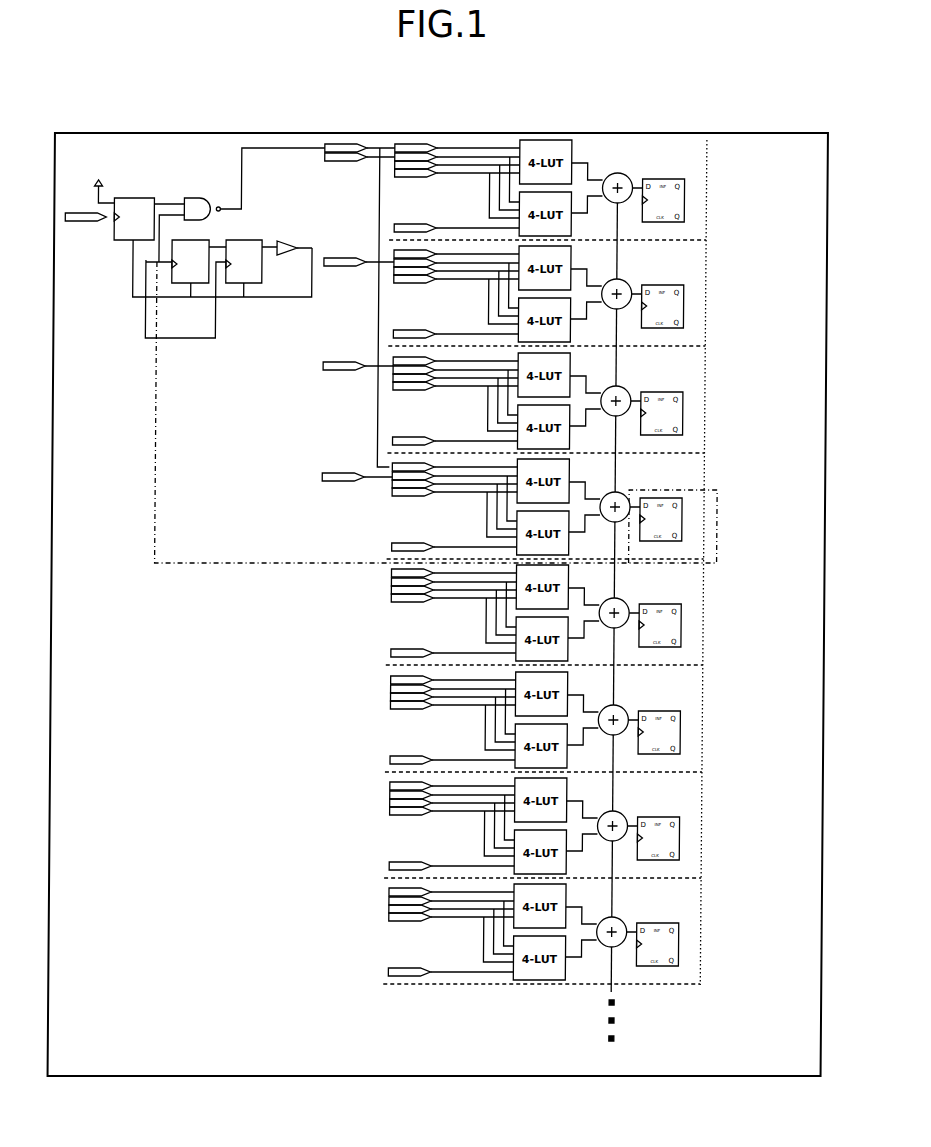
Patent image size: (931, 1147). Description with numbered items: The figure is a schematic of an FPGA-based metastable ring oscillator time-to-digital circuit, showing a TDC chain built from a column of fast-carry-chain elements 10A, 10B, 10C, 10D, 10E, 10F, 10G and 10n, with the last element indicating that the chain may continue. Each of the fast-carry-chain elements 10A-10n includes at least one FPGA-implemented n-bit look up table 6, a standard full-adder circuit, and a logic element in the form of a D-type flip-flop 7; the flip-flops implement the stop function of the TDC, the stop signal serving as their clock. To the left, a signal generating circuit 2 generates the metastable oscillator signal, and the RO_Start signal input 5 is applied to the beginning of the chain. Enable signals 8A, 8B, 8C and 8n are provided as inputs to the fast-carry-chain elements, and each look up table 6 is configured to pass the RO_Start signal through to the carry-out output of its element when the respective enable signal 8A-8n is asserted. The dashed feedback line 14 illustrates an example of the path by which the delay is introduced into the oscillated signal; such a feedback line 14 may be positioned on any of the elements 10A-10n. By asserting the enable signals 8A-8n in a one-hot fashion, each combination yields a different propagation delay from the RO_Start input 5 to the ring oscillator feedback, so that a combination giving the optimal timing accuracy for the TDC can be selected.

The signal generating circuit 2 is at (175, 303).
The RO_Start signal input 5 is at (242, 173).
The n-bit look up table (LUT) 6 is at (566, 138).
The D-type flip-flop 7 is at (653, 183).
The enable signal 8A is at (345, 165).
The enable signal 8B is at (352, 270).
The enable signal 8C is at (337, 377).
The enable signal 8n is at (352, 483).
The fast-carry-chain element 10A is at (594, 166).
The fast-carry-chain element 10B is at (695, 305).
The fast-carry-chain element 10C is at (710, 408).
The fast-carry-chain element 10D is at (700, 513).
The fast-carry-chain element 10E is at (692, 615).
The fast-carry-chain element 10F is at (692, 720).
The fast-carry-chain element 10G is at (705, 838).
The fast-carry-chain element 10n is at (695, 942).
The feedback line 14 is at (156, 498).